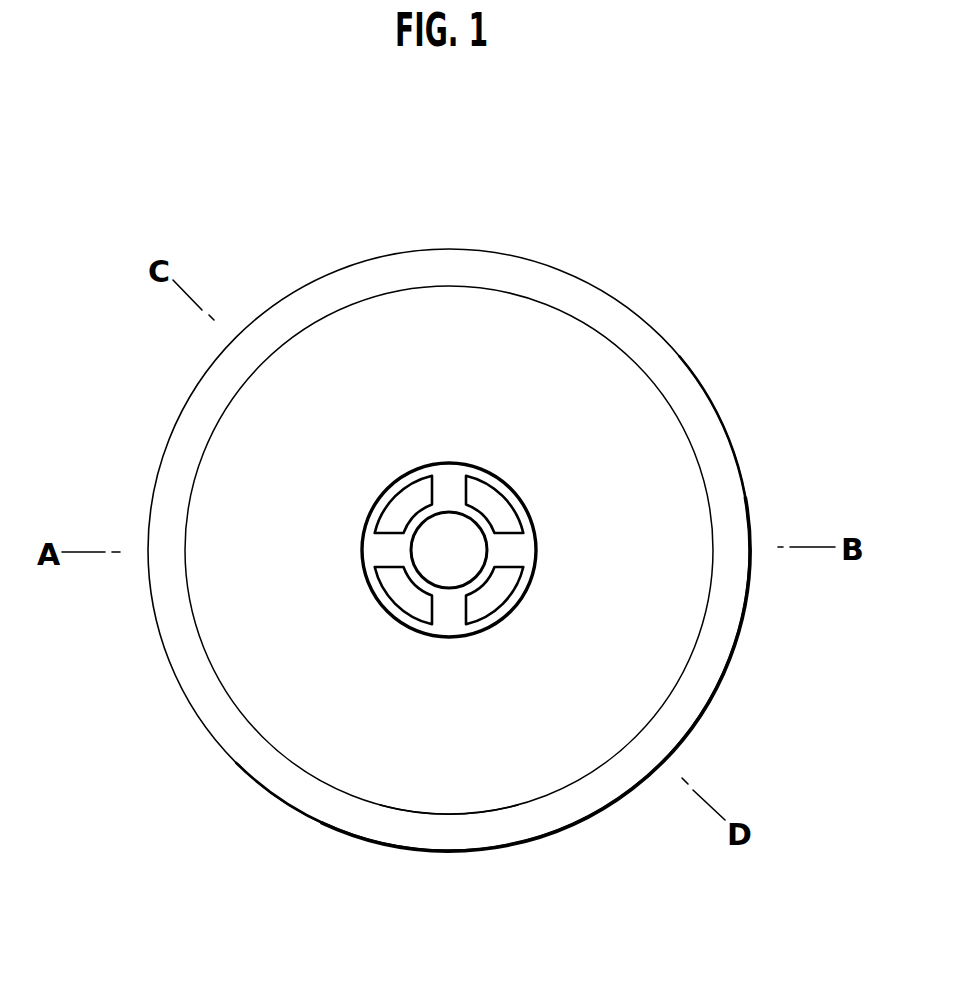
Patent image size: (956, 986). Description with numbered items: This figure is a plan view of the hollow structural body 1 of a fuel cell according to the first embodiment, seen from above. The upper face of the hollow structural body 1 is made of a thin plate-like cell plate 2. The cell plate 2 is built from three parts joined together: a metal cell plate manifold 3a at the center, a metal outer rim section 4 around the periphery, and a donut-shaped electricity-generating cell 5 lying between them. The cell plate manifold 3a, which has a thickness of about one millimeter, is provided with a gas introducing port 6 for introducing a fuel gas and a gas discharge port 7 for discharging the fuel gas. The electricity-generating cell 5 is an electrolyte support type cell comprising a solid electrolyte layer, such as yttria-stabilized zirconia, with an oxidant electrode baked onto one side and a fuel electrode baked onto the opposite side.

The hollow structural body 1 is at (545, 180).
The cell plate 2 is at (615, 275).
The cell plate manifold 3a is at (450, 470).
The outer rim section 4 is at (730, 613).
The electricity-generating cell 5 is at (480, 772).
The gas introducing port 6 is at (452, 570).
The gas discharge port 7 is at (410, 597).